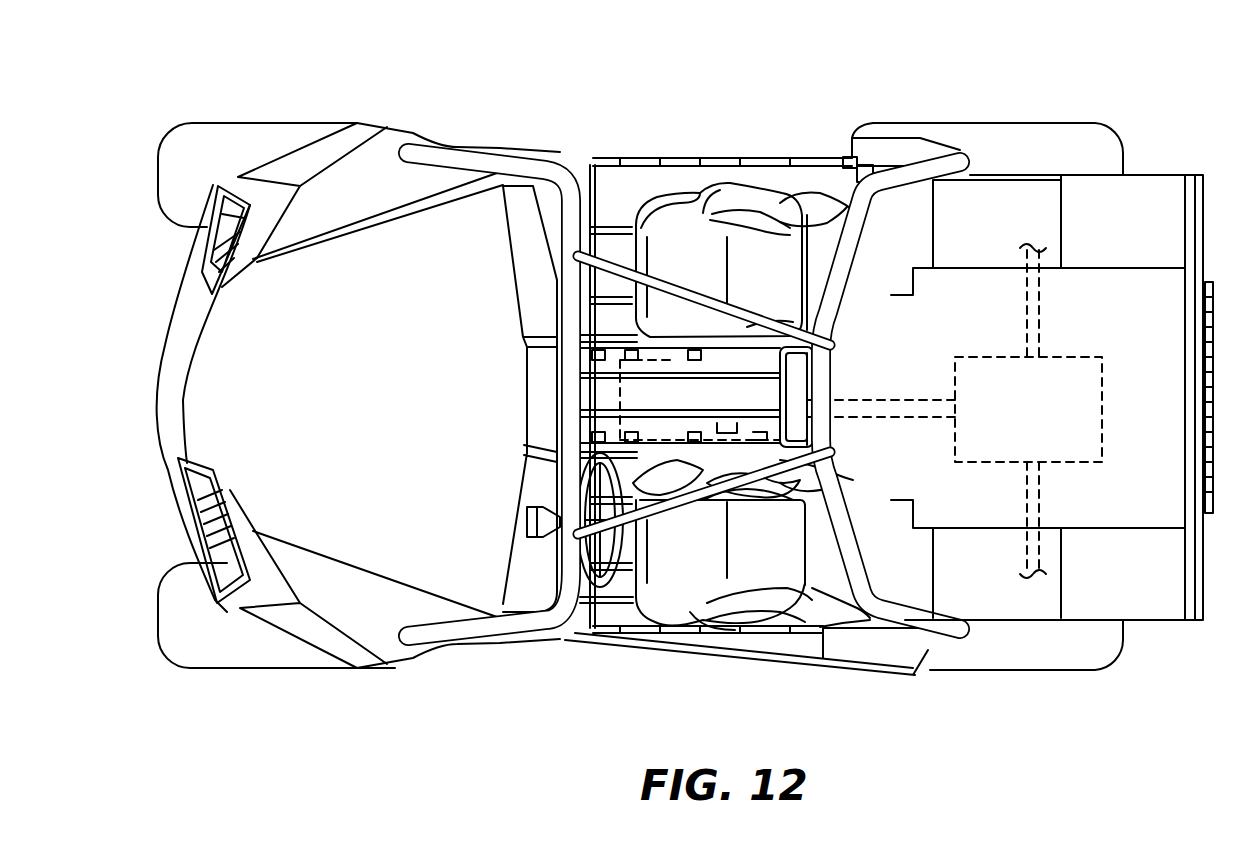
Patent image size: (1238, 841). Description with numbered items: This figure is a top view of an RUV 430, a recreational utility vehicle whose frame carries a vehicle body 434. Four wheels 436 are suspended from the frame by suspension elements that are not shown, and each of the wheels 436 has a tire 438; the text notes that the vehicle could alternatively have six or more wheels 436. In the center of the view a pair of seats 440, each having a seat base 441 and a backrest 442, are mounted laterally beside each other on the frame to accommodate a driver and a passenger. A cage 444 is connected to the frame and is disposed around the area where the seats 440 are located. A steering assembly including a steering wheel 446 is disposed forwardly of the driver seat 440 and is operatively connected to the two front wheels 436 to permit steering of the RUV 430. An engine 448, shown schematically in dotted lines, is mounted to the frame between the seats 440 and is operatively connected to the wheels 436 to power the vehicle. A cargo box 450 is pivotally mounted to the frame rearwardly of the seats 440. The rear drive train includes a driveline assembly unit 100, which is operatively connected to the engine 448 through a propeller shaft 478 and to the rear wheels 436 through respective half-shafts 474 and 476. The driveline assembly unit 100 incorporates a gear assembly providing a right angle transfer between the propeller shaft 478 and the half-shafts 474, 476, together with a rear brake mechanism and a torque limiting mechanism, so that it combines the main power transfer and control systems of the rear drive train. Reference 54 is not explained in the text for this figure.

The RUV 430 is at (455, 105).
The vehicle body 434 is at (398, 250).
The wheels 436 is at (273, 121).
The tire 438 is at (167, 137).
The body panel 54 is at (877, 210).
The seats 440 is at (757, 245).
The seat base 441 is at (690, 250).
The backrest 442 is at (817, 237).
The cage 444 is at (583, 157).
The steering wheel 446 is at (612, 560).
The engine 448 is at (750, 398).
The cargo box 450 is at (1163, 628).
The driveline assembly unit 100 is at (1050, 424).
The half-shaft 474 is at (1043, 509).
The half-shaft 476 is at (1041, 311).
The propeller shaft 478 is at (927, 420).